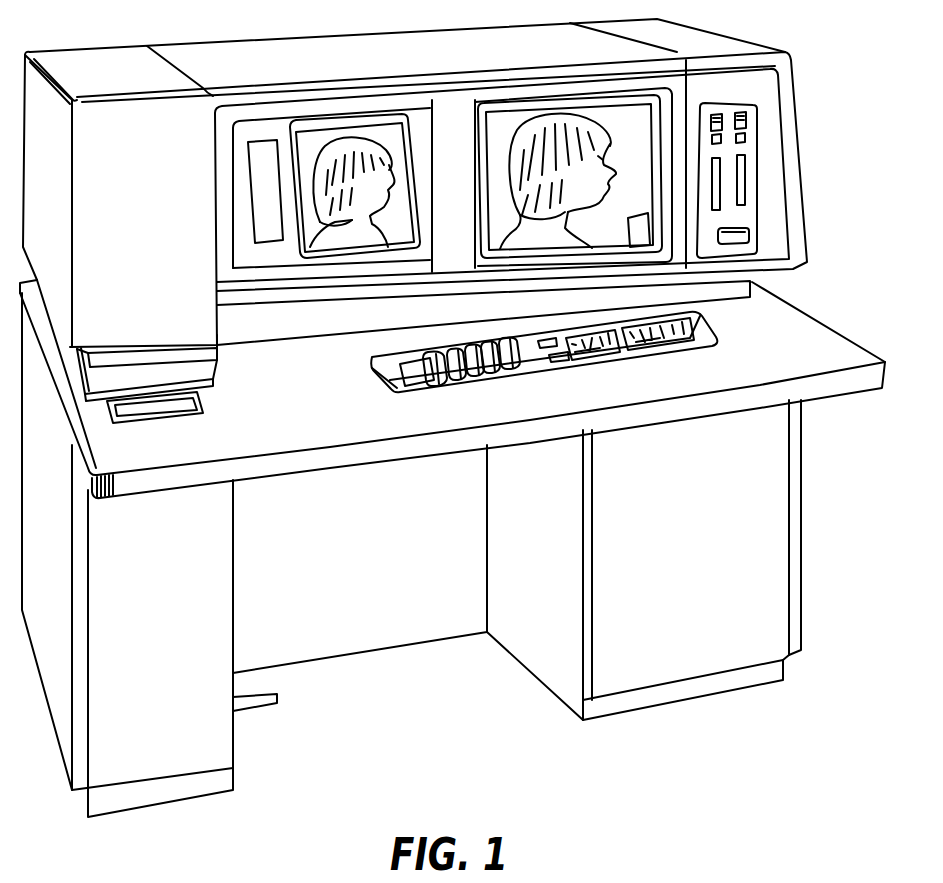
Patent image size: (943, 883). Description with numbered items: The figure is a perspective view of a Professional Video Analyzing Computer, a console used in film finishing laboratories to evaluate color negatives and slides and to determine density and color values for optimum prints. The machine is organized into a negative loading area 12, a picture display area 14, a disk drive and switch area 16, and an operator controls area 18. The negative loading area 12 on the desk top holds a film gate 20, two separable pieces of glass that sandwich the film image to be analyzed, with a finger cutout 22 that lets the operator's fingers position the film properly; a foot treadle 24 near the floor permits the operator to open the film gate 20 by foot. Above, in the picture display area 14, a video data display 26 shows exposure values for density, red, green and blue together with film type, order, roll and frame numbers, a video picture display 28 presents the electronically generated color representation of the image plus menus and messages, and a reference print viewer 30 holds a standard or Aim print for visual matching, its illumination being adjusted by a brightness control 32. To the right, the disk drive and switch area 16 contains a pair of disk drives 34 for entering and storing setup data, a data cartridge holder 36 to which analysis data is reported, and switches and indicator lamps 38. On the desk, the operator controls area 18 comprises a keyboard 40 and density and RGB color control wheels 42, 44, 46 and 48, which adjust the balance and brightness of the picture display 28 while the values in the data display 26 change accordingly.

The negative loading area 12 is at (100, 413).
The picture display area 14 is at (453, 127).
The disk drive and switch area 16 is at (750, 180).
The operator controls area 18 is at (707, 333).
The film gate 20 is at (183, 368).
The finger cutout 22 is at (173, 407).
The foot treadle 24 is at (277, 697).
The video data display 26 is at (263, 180).
The video picture display 28 is at (312, 130).
The reference print viewer 30 is at (510, 126).
The brightness control 32 is at (640, 230).
The disk drives 34 is at (740, 194).
The data cartridge holder 36 is at (740, 232).
The switches and indicator lamps 38 is at (750, 133).
The keyboard 40 is at (640, 352).
The density control wheel 42 is at (432, 386).
The red color control wheel 44 is at (473, 374).
The green color control wheel 46 is at (477, 347).
The blue color control wheel 48 is at (507, 365).